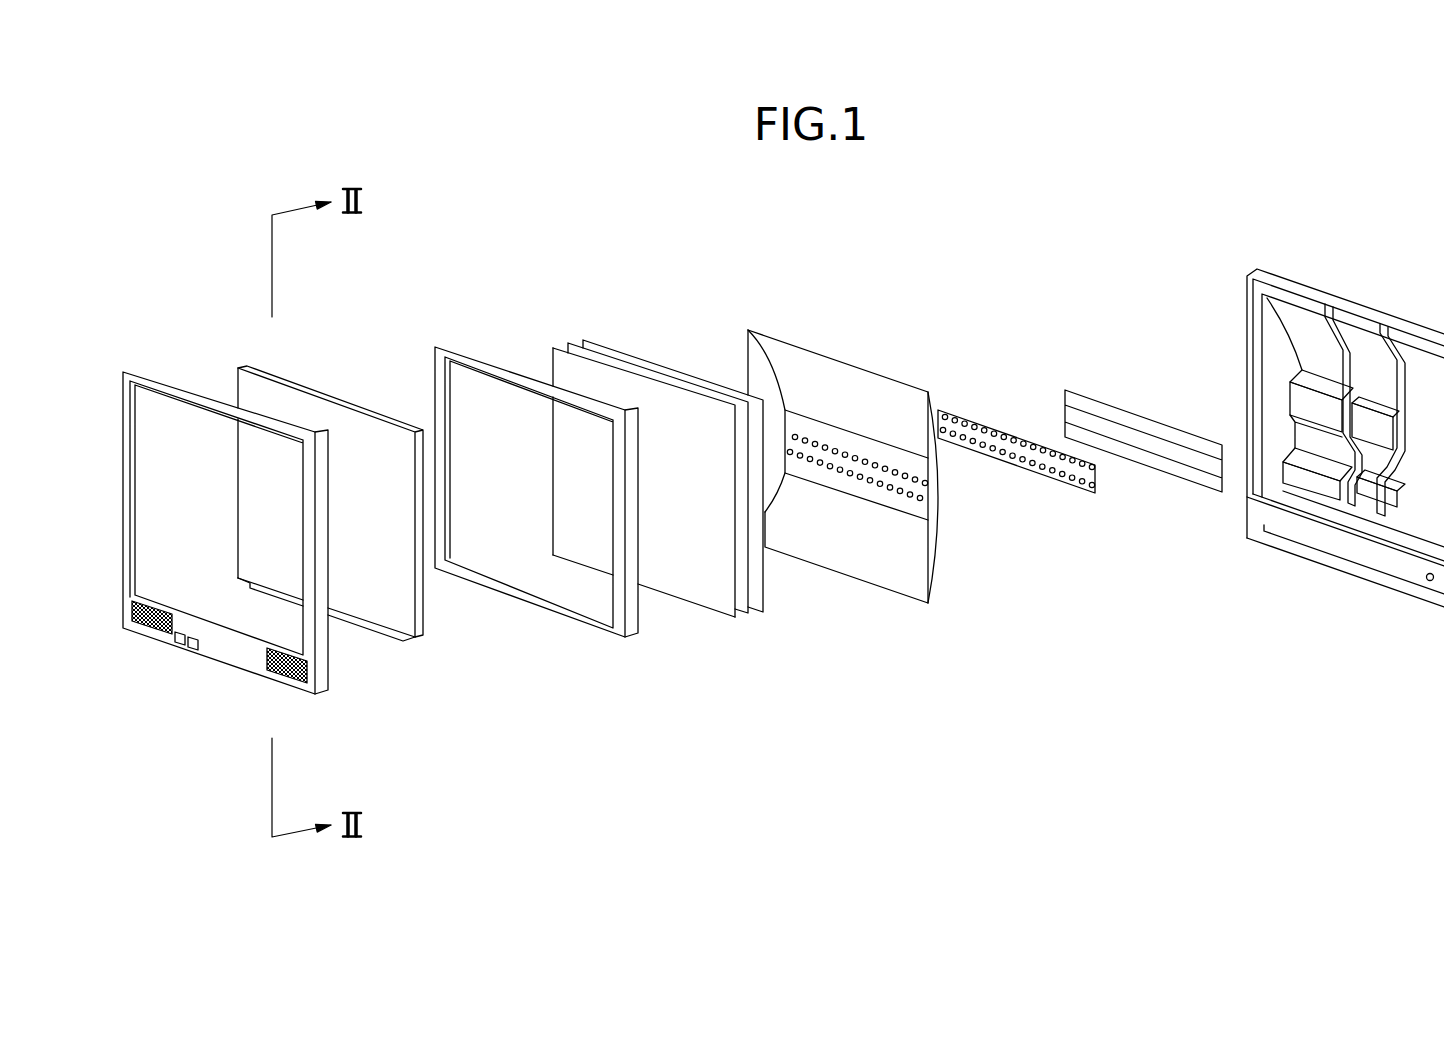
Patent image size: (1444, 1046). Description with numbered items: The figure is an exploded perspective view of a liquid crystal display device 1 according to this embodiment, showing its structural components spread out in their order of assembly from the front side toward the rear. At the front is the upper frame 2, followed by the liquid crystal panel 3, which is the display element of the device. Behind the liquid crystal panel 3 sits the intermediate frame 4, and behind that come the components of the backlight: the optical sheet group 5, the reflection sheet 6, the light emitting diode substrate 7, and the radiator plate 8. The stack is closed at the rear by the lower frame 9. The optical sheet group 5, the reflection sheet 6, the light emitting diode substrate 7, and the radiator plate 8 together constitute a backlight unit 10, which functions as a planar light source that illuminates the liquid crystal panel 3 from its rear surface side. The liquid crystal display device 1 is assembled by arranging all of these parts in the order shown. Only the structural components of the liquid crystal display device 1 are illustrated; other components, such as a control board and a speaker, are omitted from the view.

The liquid crystal display device 1 is at (930, 273).
The upper frame 2 is at (318, 697).
The liquid crystal panel 3 is at (420, 648).
The intermediate frame 4 is at (632, 648).
The optical sheet group 5 is at (730, 623).
The reflection sheet 6 is at (900, 594).
The light emitting diode substrate 7 is at (1088, 492).
The radiator plate 8 is at (1208, 490).
The lower frame 9 is at (1418, 609).
The backlight unit 10 is at (735, 670).